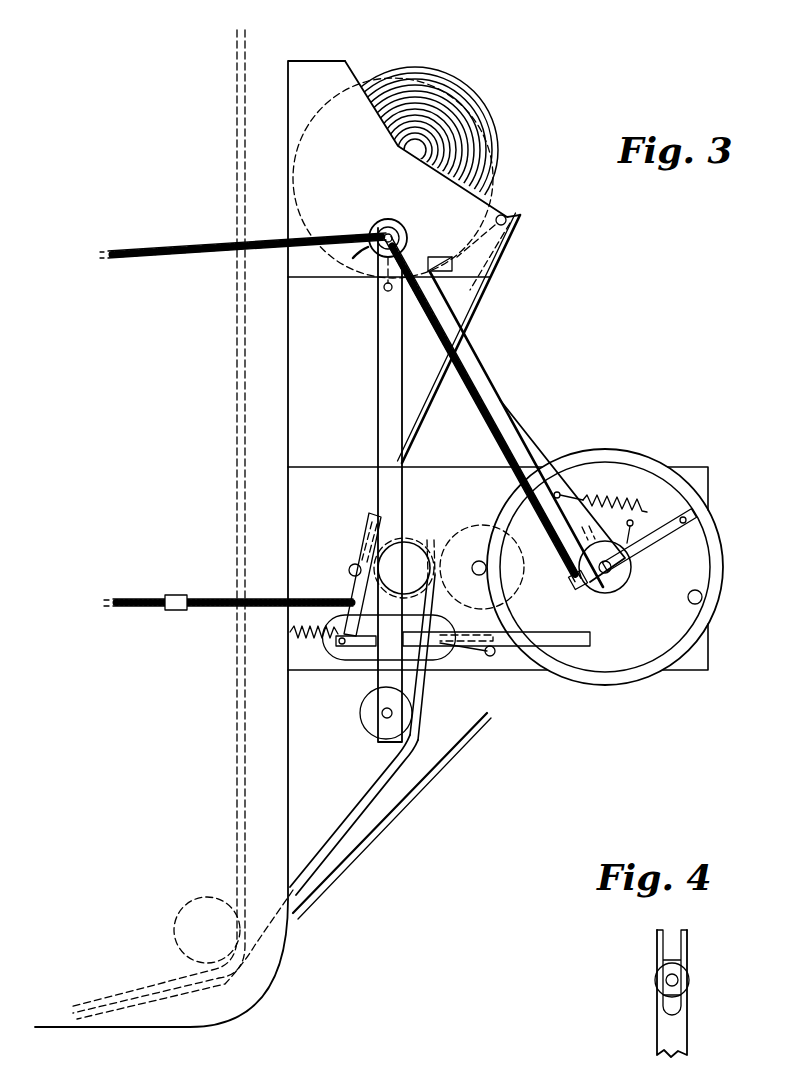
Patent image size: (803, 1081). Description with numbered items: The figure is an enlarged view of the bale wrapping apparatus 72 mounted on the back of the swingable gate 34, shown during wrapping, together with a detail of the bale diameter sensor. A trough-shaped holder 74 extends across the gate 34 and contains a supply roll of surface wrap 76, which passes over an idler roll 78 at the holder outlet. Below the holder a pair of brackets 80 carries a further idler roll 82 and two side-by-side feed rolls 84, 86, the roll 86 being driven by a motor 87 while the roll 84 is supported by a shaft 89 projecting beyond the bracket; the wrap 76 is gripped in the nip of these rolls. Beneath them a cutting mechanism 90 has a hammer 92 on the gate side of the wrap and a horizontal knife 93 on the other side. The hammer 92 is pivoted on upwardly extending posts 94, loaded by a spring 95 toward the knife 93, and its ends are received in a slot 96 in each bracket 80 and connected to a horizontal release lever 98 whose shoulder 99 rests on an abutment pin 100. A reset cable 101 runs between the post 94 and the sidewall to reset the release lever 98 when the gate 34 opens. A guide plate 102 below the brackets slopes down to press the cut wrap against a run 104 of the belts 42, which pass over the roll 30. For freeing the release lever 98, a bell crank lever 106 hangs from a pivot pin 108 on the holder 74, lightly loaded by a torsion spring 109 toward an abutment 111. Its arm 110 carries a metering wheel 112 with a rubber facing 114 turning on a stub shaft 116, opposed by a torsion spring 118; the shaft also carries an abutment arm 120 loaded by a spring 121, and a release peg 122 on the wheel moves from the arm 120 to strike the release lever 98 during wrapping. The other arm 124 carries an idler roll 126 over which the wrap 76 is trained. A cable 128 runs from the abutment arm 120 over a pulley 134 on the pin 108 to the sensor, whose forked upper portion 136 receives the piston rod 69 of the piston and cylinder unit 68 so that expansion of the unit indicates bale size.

In FIG. 3, the roll 30 is at (212, 876).
In FIG. 3, the swingable gate 34 is at (270, 396).
In FIG. 3, the rubber belts 42 is at (236, 490).
In FIG. 4, the piston and cylinder unit 68 is at (690, 978).
In FIG. 4, the piston rod 69 is at (666, 978).
In FIG. 3, the bale wrapping apparatus 72 is at (517, 149).
In FIG. 3, the trough-shaped holder 74 is at (318, 72).
In FIG. 3, the surface wrap 76 is at (470, 96).
In FIG. 3, the idler roll 78 is at (507, 205).
In FIG. 3, the brackets 80 is at (340, 499).
In FIG. 3, the idler roll 82 is at (350, 562).
In FIG. 3, the feed roll 84 is at (490, 522).
In FIG. 3, the feed roll 86 is at (413, 544).
In FIG. 3, the motor 87 is at (422, 576).
In FIG. 3, the shaft 89 is at (456, 552).
In FIG. 3, the cutting mechanism 90 is at (447, 680).
In FIG. 3, the hammer 92 is at (366, 654).
In FIG. 3, the horizontal knife 93 is at (452, 655).
In FIG. 3, the posts 94 is at (352, 588).
In FIG. 3, the spring 95 is at (290, 632).
In FIG. 3, the slot 96 is at (330, 644).
In FIG. 3, the release lever 98 is at (574, 618).
In FIG. 3, the shoulder 99 is at (494, 643).
In FIG. 3, the abutment pin 100 is at (494, 657).
In FIG. 3, the reset cable 101 is at (150, 608).
In FIG. 3, the guide plate 102 is at (375, 826).
In FIG. 3, the belt run 104 is at (134, 975).
In FIG. 3, the bell crank lever 106 is at (526, 370).
In FIG. 3, the pivot pin 108 is at (392, 216).
In FIG. 3, the torsion spring 109 is at (370, 228).
In FIG. 3, the arm 110 is at (515, 410).
In FIG. 3, the abutment 111 is at (436, 256).
In FIG. 3, the metering wheel 112 is at (607, 660).
In FIG. 3, the rubber facing 114 is at (736, 585).
In FIG. 3, the stub shaft 116 is at (608, 577).
In FIG. 3, the torsion spring 118 is at (627, 520).
In FIG. 3, the abutment arm 120 is at (692, 515).
In FIG. 3, the spring 121 is at (648, 512).
In FIG. 3, the release peg 122 is at (702, 598).
In FIG. 3, the arm 124 is at (380, 437).
In FIG. 3, the idler roll 126 is at (370, 728).
In FIG. 3, the cable 128 is at (140, 257).
In FIG. 3, the pulley 134 is at (368, 282).
In FIG. 4, the upper portion 136 is at (686, 950).